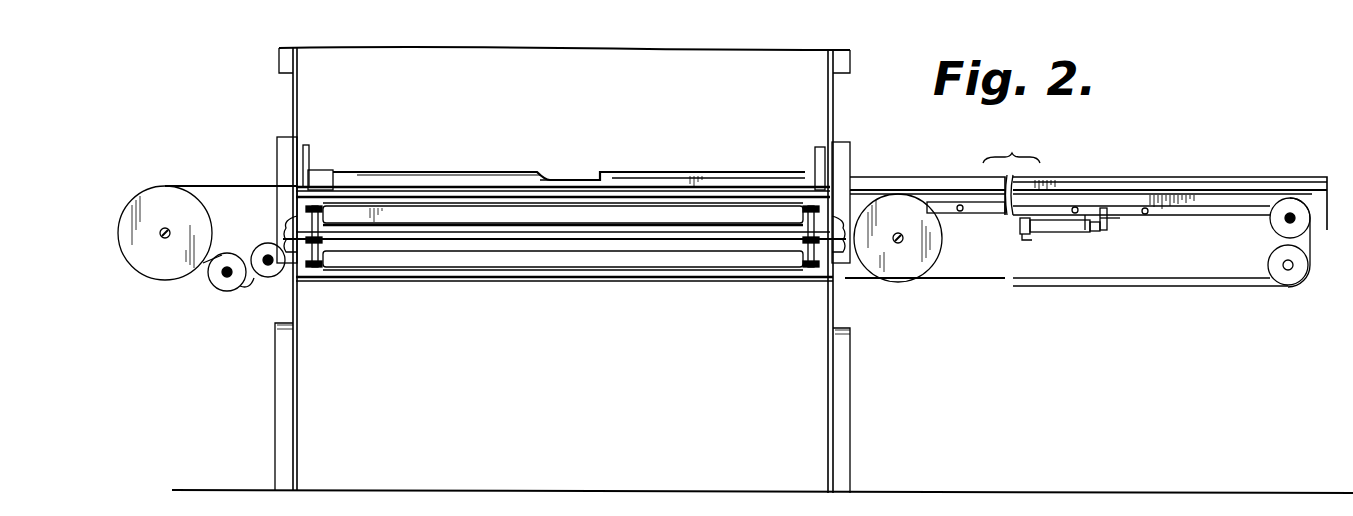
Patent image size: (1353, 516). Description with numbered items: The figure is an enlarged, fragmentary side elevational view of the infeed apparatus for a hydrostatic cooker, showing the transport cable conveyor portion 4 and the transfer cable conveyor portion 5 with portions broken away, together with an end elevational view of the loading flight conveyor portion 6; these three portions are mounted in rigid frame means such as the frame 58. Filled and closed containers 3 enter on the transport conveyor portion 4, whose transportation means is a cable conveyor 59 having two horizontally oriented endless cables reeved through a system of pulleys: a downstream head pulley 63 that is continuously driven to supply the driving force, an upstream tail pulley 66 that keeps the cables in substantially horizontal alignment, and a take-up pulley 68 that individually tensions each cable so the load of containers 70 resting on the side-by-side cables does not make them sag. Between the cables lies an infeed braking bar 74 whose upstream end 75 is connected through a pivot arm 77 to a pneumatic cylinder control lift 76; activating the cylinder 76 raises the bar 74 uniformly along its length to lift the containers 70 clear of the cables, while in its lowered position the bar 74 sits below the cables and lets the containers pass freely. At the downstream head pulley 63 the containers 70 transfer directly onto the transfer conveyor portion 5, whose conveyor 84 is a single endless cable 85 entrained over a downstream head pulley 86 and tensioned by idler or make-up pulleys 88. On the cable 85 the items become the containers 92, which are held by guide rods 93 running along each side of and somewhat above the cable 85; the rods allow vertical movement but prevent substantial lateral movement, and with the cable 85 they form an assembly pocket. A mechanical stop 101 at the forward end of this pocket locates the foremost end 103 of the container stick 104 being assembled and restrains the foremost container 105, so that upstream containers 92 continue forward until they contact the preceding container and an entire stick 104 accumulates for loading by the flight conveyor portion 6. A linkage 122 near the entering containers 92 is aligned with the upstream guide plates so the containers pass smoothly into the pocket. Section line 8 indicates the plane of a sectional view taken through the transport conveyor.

The containers 3 is at (823, 136).
The transport cable conveyor portion 4 is at (1127, 290).
The transfer cable conveyor portion 5 is at (722, 122).
The loading flight conveyor portion 6 is at (660, 303).
The section line 8- 8 is at (972, 168).
The frame 58 is at (836, 312).
The cable conveyor 59 is at (942, 182).
The head pulley 63 is at (912, 272).
The tail pulley 66 is at (1278, 230).
The take-up pulley 68 is at (1282, 266).
The containers 70 is at (1160, 175).
The infeed braking bar 74 is at (992, 213).
The upstream end 75 is at (1088, 205).
The pneumatic cylinder control lift 76 is at (1062, 226).
The pivot arm 77 is at (1104, 212).
The conveyor 84 is at (710, 195).
The endless cable 85 is at (233, 184).
The head pulley 86 is at (161, 192).
The idler pulleys 88 is at (246, 284).
The containers 92 is at (778, 174).
The guide rods 93 is at (656, 183).
The mechanical stop 101 is at (321, 170).
The foremost end 103 is at (338, 182).
The container stick 104 is at (468, 176).
The foremost container 105 is at (357, 172).
The linkage 122 is at (815, 154).